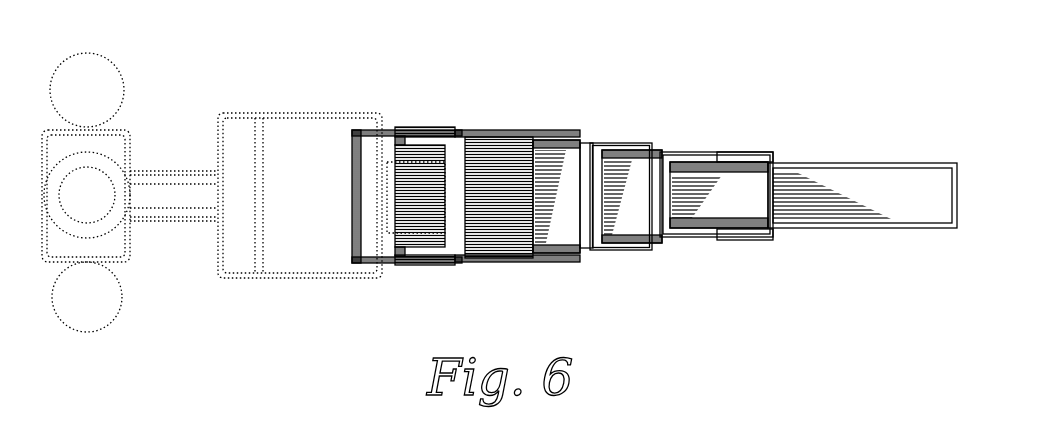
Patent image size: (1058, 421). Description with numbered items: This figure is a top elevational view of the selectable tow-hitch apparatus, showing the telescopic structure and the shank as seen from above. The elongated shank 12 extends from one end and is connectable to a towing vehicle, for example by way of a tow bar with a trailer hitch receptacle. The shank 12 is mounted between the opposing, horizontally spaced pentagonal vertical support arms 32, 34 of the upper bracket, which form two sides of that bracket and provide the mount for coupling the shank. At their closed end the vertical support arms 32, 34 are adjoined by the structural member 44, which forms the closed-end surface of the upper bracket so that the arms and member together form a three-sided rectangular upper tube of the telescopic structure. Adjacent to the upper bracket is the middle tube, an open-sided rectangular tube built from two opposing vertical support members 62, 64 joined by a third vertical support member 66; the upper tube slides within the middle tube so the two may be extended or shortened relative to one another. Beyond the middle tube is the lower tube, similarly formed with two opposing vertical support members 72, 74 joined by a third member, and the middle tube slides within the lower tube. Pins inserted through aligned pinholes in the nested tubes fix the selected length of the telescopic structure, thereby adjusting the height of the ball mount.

The elongated shank 12 is at (920, 182).
The vertical support arm 32 is at (735, 238).
The vertical support arm 34 is at (722, 152).
The structural member 44 is at (667, 213).
The vertical support member 62 is at (620, 243).
The vertical support member 64 is at (618, 142).
The vertical support member 66 is at (600, 240).
The vertical support member 72 is at (490, 258).
The vertical support member 74 is at (530, 133).